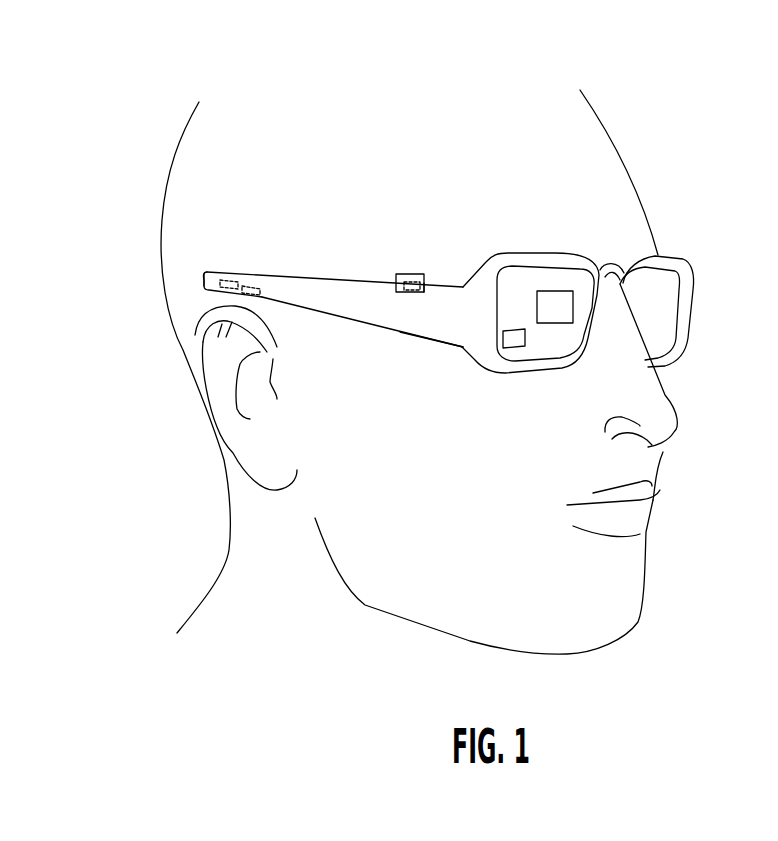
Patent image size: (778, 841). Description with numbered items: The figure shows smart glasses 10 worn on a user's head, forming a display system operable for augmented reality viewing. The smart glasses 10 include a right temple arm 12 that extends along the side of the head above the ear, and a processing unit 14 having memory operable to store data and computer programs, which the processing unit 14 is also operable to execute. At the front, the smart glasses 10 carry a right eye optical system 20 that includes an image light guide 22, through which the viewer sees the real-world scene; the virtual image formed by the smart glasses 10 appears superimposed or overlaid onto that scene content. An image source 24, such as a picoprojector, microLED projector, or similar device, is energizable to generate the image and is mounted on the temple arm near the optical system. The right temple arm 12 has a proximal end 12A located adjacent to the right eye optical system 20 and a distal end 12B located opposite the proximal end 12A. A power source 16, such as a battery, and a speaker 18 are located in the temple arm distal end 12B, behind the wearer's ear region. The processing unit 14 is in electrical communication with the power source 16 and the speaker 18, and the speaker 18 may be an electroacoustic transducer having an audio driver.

The smart glasses 10 is at (333, 138).
The right temple arm 12 is at (313, 279).
The proximal end 12A is at (438, 382).
The distal end 12B is at (200, 282).
The processing unit 14 is at (407, 275).
The power source 16 is at (217, 272).
The speaker 18 is at (250, 285).
The right eye optical system 20 is at (500, 215).
The image light guide 22 is at (538, 272).
The image source 24 is at (424, 283).